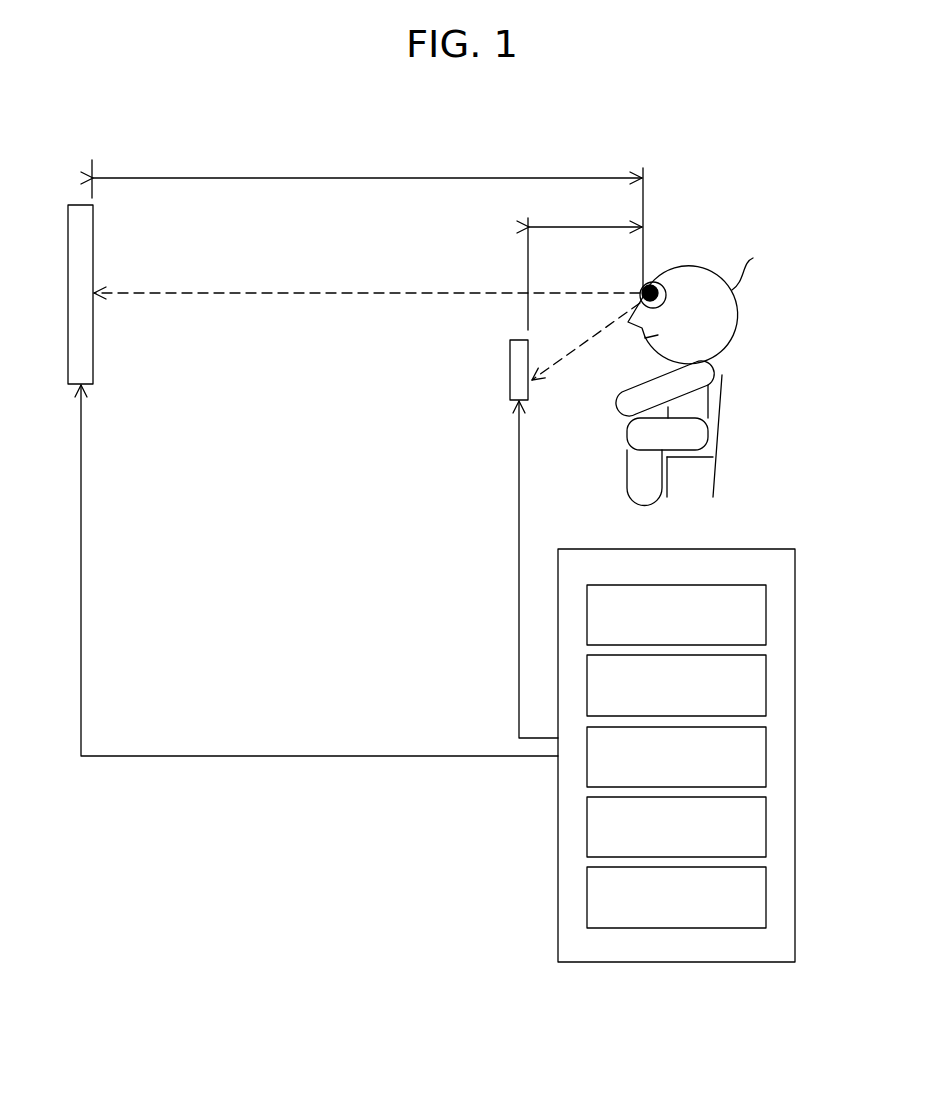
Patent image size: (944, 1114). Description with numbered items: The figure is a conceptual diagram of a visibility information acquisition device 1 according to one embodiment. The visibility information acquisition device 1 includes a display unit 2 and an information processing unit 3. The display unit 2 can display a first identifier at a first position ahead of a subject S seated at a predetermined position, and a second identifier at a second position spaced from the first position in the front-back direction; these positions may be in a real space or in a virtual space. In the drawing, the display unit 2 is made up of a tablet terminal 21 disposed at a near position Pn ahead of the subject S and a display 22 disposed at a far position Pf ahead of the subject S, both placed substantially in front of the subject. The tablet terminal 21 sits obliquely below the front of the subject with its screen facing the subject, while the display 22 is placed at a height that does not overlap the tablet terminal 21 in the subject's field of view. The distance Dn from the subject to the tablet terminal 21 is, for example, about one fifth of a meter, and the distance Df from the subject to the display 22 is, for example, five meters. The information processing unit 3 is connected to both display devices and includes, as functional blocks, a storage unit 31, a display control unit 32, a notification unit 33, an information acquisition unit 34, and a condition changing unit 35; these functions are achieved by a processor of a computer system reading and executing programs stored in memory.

The visibility information acquisition device 1 is at (193, 832).
The display unit 2 is at (405, 445).
The tablet terminal 21 is at (510, 380).
The display 22 is at (93, 334).
The information processing unit 3 is at (758, 549).
The storage unit 31 is at (766, 612).
The display control unit 32 is at (766, 682).
The notification unit 33 is at (766, 755).
The information acquisition unit 34 is at (766, 825).
The condition changing unit 35 is at (766, 895).